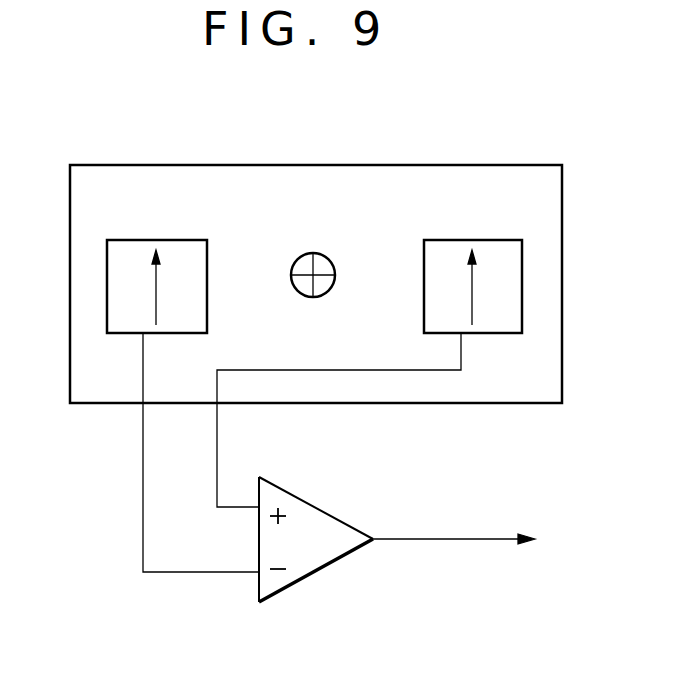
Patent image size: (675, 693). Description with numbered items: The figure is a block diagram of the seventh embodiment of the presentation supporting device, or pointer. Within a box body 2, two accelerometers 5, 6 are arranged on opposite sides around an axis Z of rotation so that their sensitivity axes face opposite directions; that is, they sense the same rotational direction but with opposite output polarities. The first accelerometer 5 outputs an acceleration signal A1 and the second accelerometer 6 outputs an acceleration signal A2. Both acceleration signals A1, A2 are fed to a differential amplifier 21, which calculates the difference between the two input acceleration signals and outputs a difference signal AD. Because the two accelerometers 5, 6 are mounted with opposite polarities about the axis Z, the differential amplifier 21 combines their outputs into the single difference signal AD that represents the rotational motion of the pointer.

The box body 2 is at (470, 403).
The accelerometer 5 is at (146, 240).
The accelerometer 6 is at (461, 240).
The axis of rotation Z is at (335, 262).
The differential amplifier 21 is at (335, 517).
The acceleration signal A1 is at (183, 452).
The acceleration signal A2 is at (339, 420).
The difference signal AD is at (454, 525).